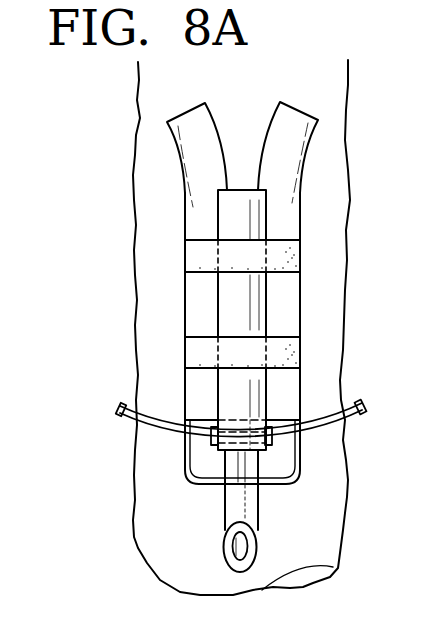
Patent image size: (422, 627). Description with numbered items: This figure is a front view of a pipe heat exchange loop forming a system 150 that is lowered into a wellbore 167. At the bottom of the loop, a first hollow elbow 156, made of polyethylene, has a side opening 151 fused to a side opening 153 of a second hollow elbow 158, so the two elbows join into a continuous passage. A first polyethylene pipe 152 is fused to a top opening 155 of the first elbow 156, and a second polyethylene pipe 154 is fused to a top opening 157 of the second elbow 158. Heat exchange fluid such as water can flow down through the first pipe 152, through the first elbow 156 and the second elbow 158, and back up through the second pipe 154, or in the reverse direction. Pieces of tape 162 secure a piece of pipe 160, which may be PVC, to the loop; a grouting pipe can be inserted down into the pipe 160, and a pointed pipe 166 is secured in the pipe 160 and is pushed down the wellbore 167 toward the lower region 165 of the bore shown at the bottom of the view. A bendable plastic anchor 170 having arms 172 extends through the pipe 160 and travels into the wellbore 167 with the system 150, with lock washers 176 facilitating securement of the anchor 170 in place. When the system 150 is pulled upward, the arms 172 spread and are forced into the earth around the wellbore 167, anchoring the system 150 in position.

The system 150 is at (178, 128).
The side opening 151 is at (238, 462).
The first polyethylene pipe 152 is at (198, 292).
The side opening 153 is at (257, 490).
The second polyethylene pipe 154 is at (295, 132).
The top opening 155 is at (207, 412).
The first hollow elbow 156 is at (183, 448).
The top opening 157 is at (284, 414).
The second hollow elbow 158 is at (285, 452).
The pipe 160 is at (250, 212).
The pieces of tape 162 is at (195, 250).
The bottom of bore hole 165 is at (333, 567).
The pointed pipe 166 is at (255, 542).
The wellbore 167 is at (133, 540).
The bendable anchor 170 is at (120, 413).
The arms 172 is at (128, 398).
The lock washers 176 is at (212, 450).